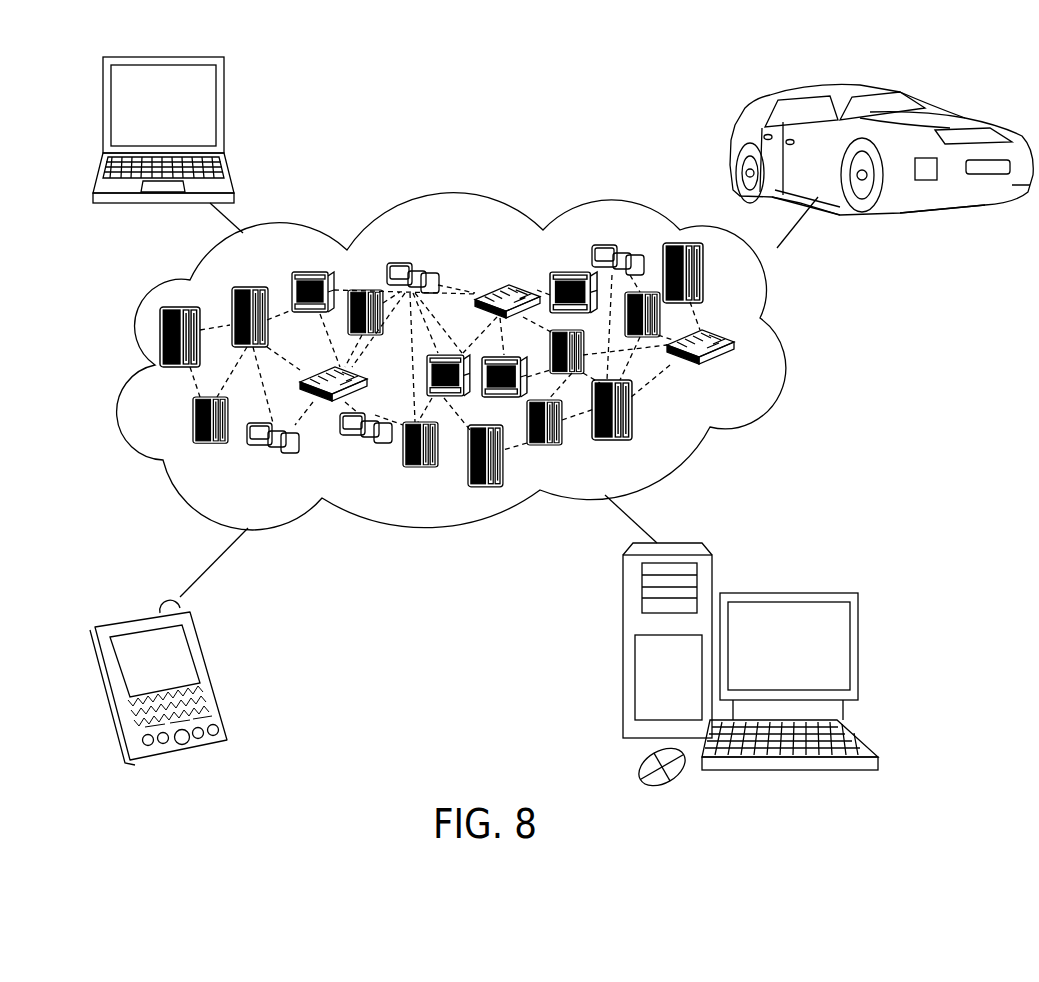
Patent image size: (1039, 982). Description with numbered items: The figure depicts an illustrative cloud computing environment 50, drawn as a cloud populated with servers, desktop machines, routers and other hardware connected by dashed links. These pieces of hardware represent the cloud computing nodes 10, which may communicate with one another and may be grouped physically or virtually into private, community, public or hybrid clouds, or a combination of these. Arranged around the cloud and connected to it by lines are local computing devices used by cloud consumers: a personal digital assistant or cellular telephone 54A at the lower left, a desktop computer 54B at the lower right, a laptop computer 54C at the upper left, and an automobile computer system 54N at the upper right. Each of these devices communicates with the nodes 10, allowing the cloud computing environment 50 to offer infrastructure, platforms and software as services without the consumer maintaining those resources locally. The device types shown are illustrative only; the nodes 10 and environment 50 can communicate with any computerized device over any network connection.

The cloud computing nodes 10 is at (750, 370).
The cloud computing environment 50 is at (803, 353).
The personal digital assistant or cellular telephone 54A is at (210, 667).
The desktop computer 54B is at (818, 592).
The laptop computer 54C is at (224, 120).
The automobile computer system 54N is at (935, 105).